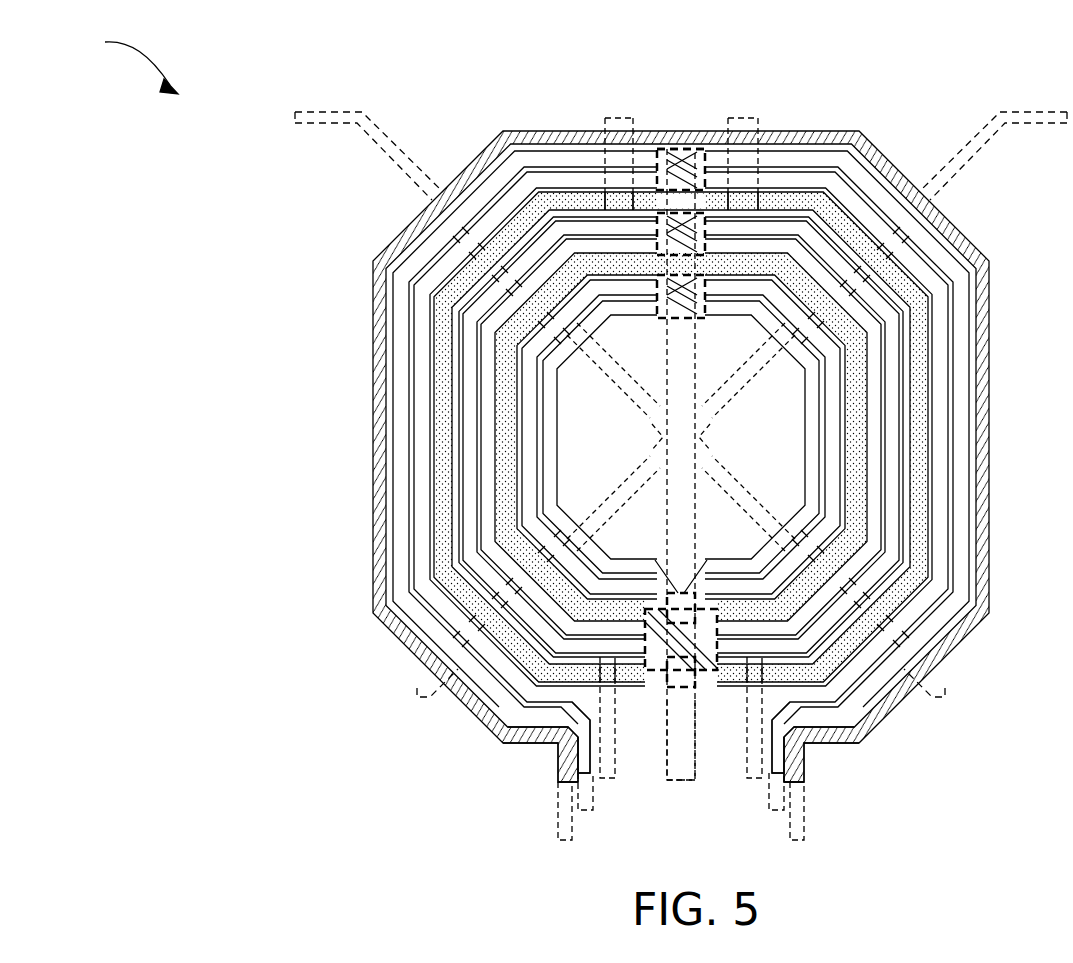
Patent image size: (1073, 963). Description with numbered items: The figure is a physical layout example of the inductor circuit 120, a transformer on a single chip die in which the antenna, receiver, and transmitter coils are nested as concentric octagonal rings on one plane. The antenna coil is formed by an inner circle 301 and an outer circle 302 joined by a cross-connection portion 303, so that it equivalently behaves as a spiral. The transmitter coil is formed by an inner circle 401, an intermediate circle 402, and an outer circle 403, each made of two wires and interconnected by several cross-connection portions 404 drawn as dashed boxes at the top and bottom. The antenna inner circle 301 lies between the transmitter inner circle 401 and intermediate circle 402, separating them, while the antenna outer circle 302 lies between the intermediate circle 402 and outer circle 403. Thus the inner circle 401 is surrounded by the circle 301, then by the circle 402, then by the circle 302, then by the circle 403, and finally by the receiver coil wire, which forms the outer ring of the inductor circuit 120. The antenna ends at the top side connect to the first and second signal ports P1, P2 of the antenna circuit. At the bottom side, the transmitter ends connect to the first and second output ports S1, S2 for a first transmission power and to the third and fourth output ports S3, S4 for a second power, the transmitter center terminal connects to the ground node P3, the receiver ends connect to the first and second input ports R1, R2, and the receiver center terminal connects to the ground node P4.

The inductor circuit 120 is at (116, 62).
The inner circle of the antenna inductive circuit 301 is at (853, 430).
The outer circle of the antenna inductive circuit 302 is at (918, 465).
The cross-connection portion 303 is at (655, 682).
The inner circle of the transmitter inductive circuit 401 is at (833, 413).
The intermediate circle of the transmitter inductive circuit 402 is at (875, 355).
The outer circle of the transmitter inductive circuit 403 is at (938, 500).
The cross-connection portions 404 is at (698, 147).
The first signal port P1 is at (744, 138).
The second signal port P2 is at (620, 138).
The ground node of the transmitter circuit P3 is at (681, 785).
The ground node of the receiver circuit P4 is at (681, 785).
The first output port S1 is at (771, 808).
The second output port S2 is at (593, 808).
The third output port S3 is at (751, 737).
The fourth output port S4 is at (613, 737).
The first input port R1 is at (796, 830).
The second input port R2 is at (566, 830).